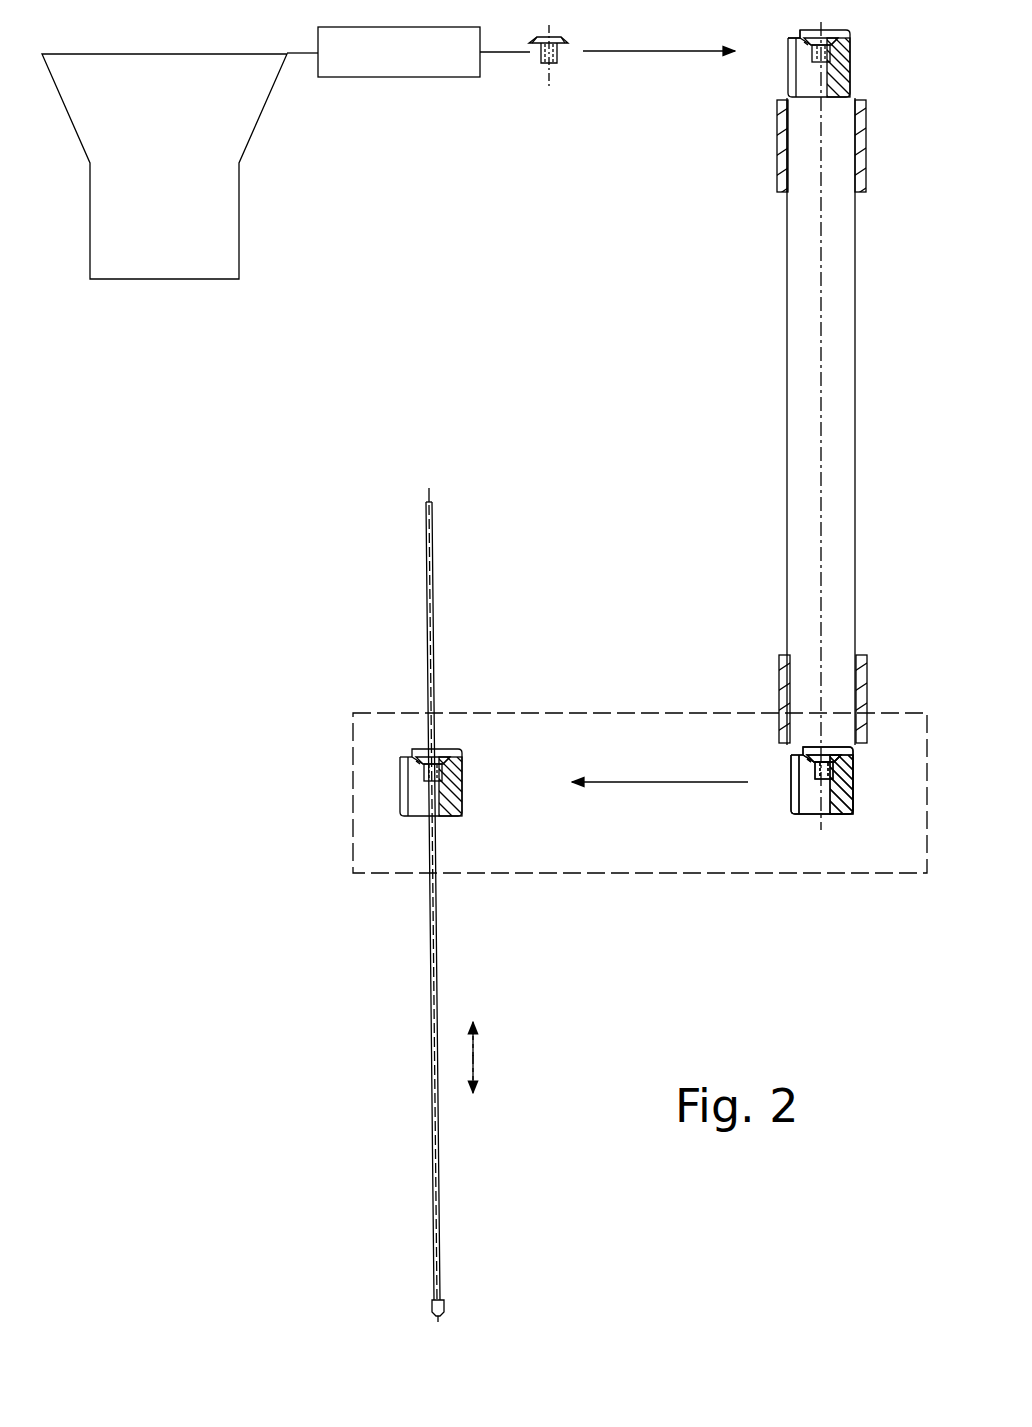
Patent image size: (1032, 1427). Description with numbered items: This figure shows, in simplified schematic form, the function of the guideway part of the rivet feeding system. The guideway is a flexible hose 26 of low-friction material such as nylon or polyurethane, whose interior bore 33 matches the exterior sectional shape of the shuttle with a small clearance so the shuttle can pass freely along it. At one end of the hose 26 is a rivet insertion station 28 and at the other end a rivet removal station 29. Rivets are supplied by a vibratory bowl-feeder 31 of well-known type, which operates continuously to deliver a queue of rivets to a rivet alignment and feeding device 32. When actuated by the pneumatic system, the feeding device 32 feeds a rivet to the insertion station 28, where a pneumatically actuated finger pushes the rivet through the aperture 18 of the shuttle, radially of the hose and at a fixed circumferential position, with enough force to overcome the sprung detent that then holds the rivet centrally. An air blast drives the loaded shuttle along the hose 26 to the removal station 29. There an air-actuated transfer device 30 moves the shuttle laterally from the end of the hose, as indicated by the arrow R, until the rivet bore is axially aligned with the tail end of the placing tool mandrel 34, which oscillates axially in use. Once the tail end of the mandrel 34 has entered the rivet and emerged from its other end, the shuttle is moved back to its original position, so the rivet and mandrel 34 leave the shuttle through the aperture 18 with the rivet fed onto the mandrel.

The aperture 18 is at (787, 53).
The hose 26 is at (787, 325).
The rivet insertion station 28 is at (781, 78).
The rivet removal station 29 is at (772, 836).
The transfer device 30 is at (640, 876).
The vibratory bowl-feeder 31 is at (133, 245).
The rivet alignment and feeding device 32 is at (368, 52).
The interior bore 33 is at (807, 378).
The placing tool mandrel 34 is at (440, 960).
The arrow R is at (615, 772).